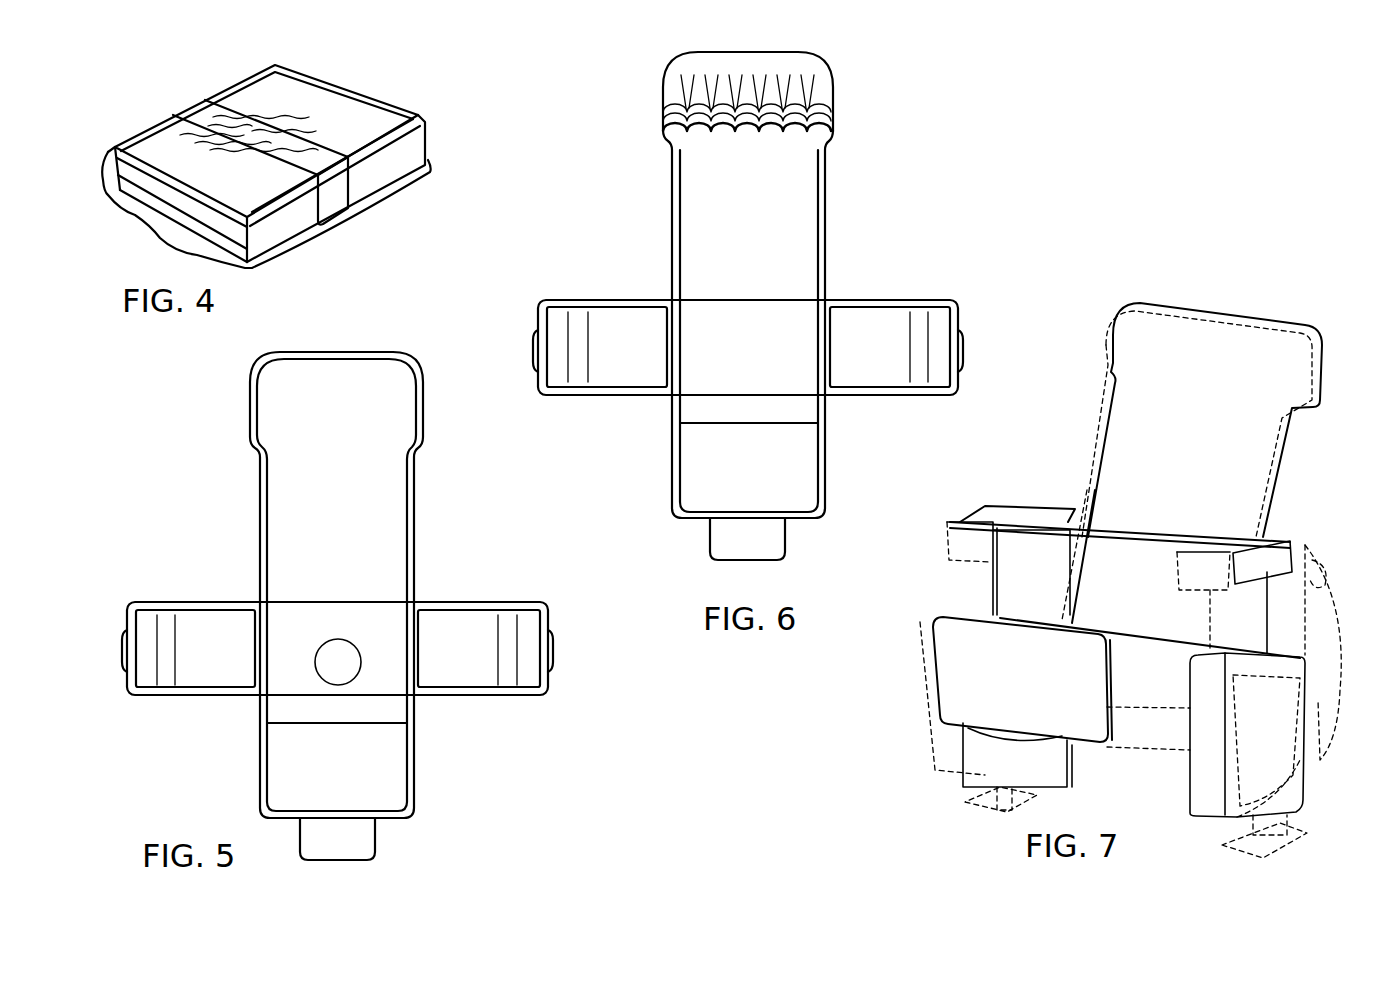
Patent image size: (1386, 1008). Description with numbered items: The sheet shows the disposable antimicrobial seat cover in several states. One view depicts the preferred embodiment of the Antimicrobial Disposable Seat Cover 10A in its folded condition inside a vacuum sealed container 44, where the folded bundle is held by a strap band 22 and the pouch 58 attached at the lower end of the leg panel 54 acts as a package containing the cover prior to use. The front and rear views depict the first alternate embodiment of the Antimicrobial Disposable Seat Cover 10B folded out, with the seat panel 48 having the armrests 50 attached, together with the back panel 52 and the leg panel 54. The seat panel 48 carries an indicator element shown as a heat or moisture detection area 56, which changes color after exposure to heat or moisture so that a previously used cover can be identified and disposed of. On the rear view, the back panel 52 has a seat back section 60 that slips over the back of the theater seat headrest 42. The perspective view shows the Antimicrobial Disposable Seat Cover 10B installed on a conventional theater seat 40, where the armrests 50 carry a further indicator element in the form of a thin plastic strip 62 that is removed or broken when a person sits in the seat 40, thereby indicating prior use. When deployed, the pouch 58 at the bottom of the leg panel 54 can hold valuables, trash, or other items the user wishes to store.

In FIG. 4, the Antimicrobial Disposable Seat Cover 10A is at (325, 105).
In FIG. 5, the Antimicrobial Disposable Seat Cover 10B is at (208, 516).
In FIG. 4, the strap band 22 is at (205, 115).
In FIG. 4, the vacuum sealed container 44 is at (427, 121).
In FIG. 5, the seat panel 48 is at (383, 623).
In FIG. 6, the seat panel 48 is at (702, 380).
In FIG. 7, the seat panel 48 is at (1132, 632).
In FIG. 5, the armrests 50 is at (195, 668).
In FIG. 6, the armrests 50 is at (624, 337).
In FIG. 7, the armrests 50 is at (1013, 562).
In FIG. 5, the back panel 52 is at (347, 378).
In FIG. 6, the back panel 52 is at (708, 215).
In FIG. 7, the back panel 52 is at (1228, 340).
In FIG. 5, the leg panel 54 is at (385, 762).
In FIG. 6, the leg panel 54 is at (790, 445).
In FIG. 7, the leg panel 54 is at (962, 685).
In FIG. 5, the heat or moisture detection area 56 is at (340, 665).
In FIG. 5, the pouch 58 is at (338, 840).
In FIG. 6, the pouch 58 is at (727, 535).
In FIG. 7, the pouch 58 is at (1043, 762).
In FIG. 6, the seat back section 60 is at (783, 82).
In FIG. 7, the thin plastic strip 62 is at (1135, 527).
In FIG. 7, the theater seat headrest 42 is at (1110, 382).
In FIG. 7, the theater seat 40 is at (1275, 750).